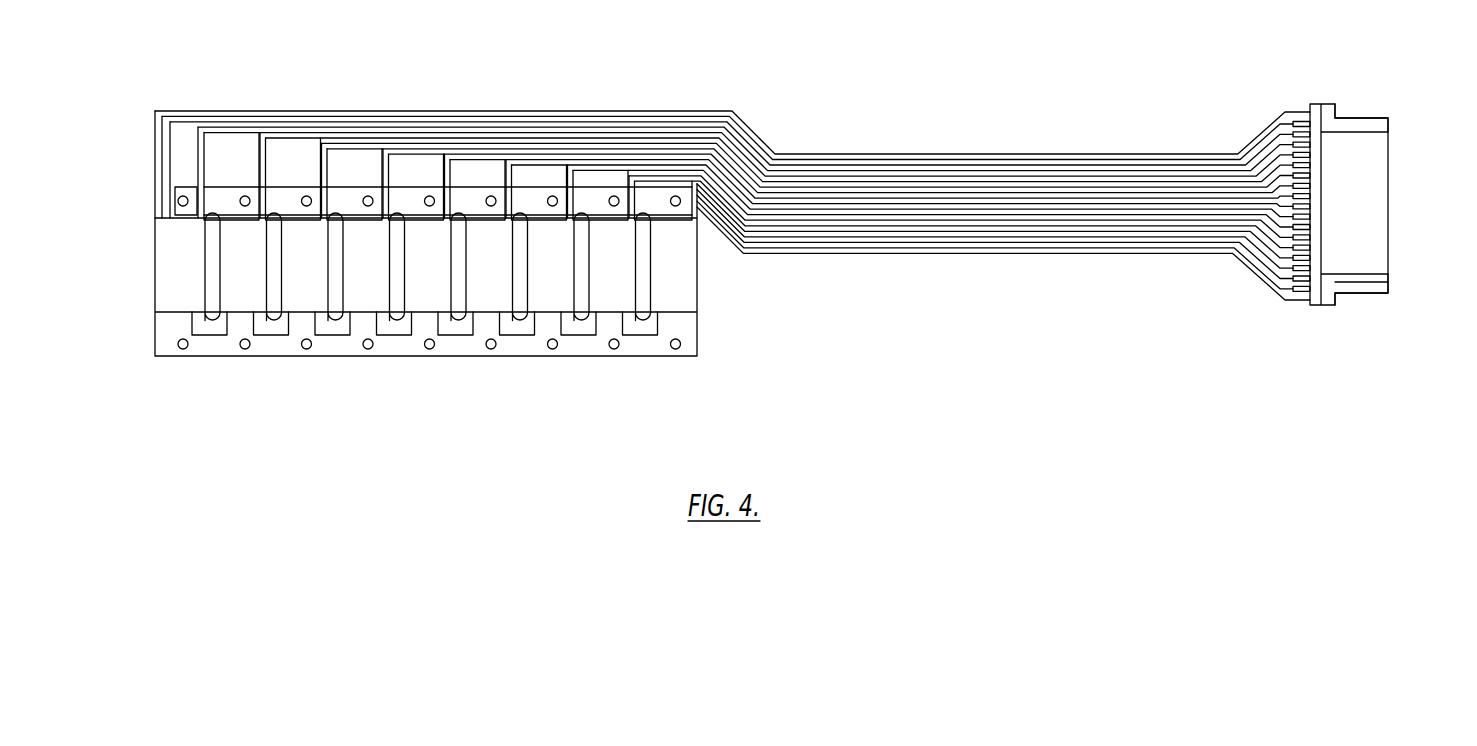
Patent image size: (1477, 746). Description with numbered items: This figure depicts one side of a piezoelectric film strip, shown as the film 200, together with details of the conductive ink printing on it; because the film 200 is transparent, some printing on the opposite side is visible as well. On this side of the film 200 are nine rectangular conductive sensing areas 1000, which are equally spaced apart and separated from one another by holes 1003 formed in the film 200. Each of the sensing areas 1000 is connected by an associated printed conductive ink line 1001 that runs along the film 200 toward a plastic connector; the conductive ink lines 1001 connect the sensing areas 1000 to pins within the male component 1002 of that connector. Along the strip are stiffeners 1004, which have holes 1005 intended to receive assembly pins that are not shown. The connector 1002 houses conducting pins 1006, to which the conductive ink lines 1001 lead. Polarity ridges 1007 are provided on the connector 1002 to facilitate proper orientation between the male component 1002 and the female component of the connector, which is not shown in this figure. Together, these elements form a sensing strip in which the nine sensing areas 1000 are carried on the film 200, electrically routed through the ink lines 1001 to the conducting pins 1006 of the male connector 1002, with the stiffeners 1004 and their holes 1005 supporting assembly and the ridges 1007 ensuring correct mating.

The film 200 is at (805, 242).
The conductive sensing areas 1000 is at (363, 283).
The printed conductive ink lines 1001 is at (880, 172).
The male component of connector 1002 is at (1388, 196).
The holes 1003 is at (519, 320).
The stiffeners 1004 is at (238, 177).
The holes 1005 is at (304, 194).
The conducting pins 1006 is at (1300, 302).
The polarity ridges 1007 is at (1388, 116).